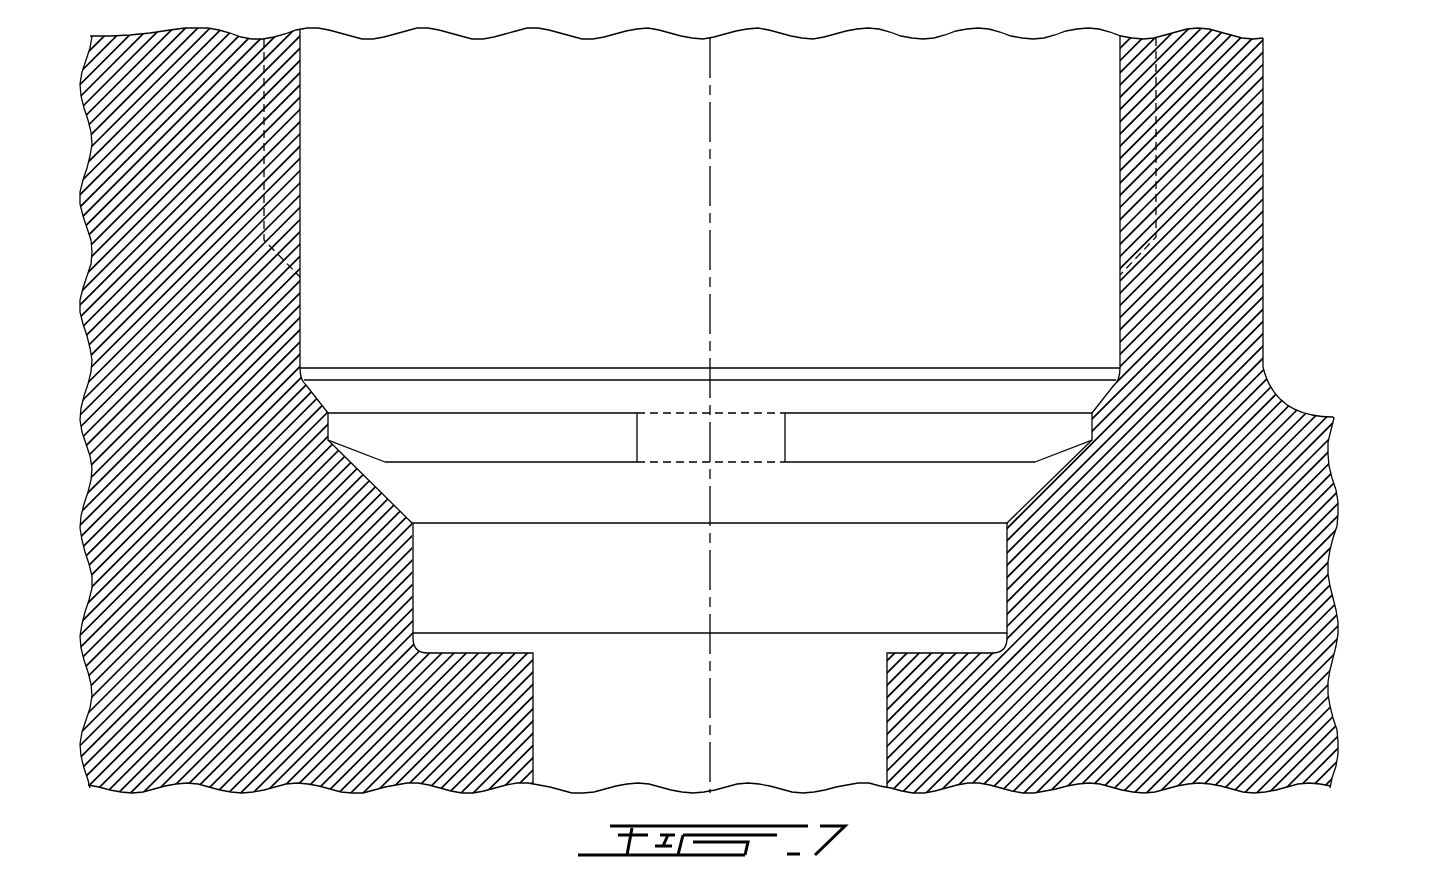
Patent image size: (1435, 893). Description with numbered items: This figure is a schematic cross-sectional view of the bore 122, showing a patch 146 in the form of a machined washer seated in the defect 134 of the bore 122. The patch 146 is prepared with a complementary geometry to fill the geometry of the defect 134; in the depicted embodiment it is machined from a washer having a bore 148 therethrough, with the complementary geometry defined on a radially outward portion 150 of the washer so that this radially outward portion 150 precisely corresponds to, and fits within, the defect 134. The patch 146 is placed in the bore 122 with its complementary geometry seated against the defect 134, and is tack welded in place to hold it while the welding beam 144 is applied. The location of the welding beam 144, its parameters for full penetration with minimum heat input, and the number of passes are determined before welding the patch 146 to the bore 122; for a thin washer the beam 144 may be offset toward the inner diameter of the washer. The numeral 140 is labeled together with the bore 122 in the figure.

The bore 122 is at (580, 97).
The bore 140 is at (710, 412).
The welding beam 144 is at (1073, 65).
The patch 146 is at (527, 432).
The bore of the washer 148 is at (783, 438).
The radially outward portion 150 is at (358, 429).
The defect 134 is at (1113, 457).